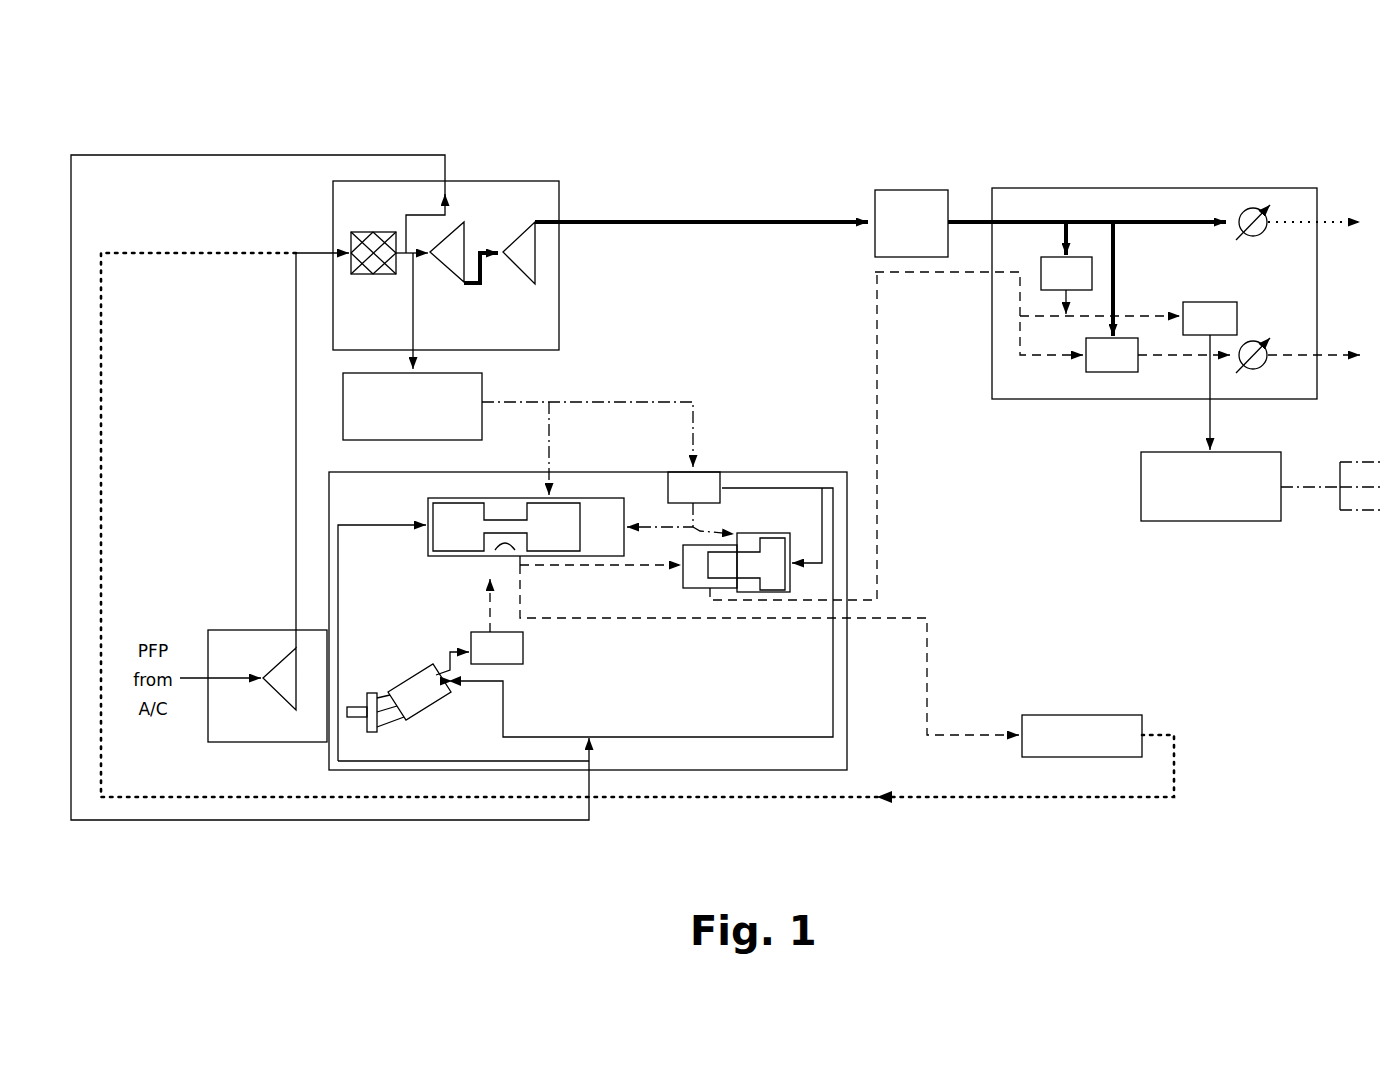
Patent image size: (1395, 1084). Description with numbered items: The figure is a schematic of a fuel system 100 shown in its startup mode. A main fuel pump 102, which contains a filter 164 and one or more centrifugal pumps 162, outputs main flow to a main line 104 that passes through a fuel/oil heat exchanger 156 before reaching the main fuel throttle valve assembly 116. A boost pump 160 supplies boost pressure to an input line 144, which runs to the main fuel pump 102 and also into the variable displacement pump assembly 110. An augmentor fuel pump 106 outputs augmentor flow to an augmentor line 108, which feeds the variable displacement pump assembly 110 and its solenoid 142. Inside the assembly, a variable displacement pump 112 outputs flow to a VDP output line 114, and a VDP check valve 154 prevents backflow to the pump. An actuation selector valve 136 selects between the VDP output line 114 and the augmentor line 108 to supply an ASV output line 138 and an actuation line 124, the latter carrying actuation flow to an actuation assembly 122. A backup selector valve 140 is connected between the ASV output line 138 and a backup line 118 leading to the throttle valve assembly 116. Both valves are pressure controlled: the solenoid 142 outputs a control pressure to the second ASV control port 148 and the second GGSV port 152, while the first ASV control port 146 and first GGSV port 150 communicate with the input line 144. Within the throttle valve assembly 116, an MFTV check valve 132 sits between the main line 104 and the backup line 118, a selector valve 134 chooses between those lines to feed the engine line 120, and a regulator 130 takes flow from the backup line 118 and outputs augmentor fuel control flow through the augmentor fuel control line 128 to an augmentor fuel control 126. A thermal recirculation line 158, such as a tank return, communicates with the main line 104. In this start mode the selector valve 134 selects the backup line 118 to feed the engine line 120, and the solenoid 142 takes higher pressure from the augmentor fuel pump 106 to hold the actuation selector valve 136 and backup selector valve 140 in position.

The fuel system 100 is at (90, 65).
The main fuel pump 102 is at (446, 259).
The main line 104 is at (723, 219).
The augmentor fuel pump 106 is at (484, 428).
The augmentor line 108 is at (662, 403).
The variable displacement pump assembly 110 is at (778, 472).
The variable displacement pump 112 is at (394, 686).
The VDP output line 114 is at (448, 648).
The main fuel throttle valve assembly 116 is at (1129, 277).
The backup line 118 is at (873, 331).
The engine line 120 is at (1337, 358).
The actuation assembly 122 is at (1056, 714).
The actuation line 124 is at (928, 640).
The augmentor fuel control 126 is at (1243, 523).
The augmentor fuel control line 128 is at (1207, 412).
The regulator 130 is at (1212, 300).
The MFTV check valve 132 is at (1037, 270).
The selector valve 134 is at (1084, 370).
The actuation selector valve 136 is at (462, 498).
The ASV output line 138 is at (592, 566).
The backup selector valve 140 is at (775, 590).
The solenoid 142 is at (667, 484).
The input line 144 is at (338, 152).
The first ASV control port 146 is at (423, 532).
The second ASV control port 148 is at (626, 528).
The first GGSV port 150 is at (792, 566).
The second GGSV port 152 is at (740, 529).
The VDP check valve 154 is at (519, 665).
The heat exchanger 156 is at (897, 189).
The thermal recirculation line 158 is at (1337, 225).
The boost pump 160 is at (273, 662).
The centrifugal pumps 162 is at (466, 250).
The filter 164 is at (359, 276).